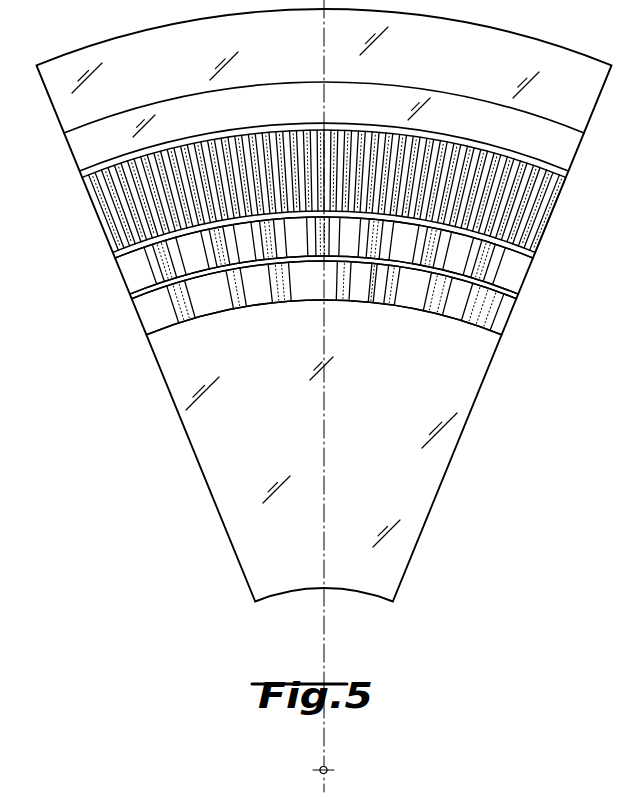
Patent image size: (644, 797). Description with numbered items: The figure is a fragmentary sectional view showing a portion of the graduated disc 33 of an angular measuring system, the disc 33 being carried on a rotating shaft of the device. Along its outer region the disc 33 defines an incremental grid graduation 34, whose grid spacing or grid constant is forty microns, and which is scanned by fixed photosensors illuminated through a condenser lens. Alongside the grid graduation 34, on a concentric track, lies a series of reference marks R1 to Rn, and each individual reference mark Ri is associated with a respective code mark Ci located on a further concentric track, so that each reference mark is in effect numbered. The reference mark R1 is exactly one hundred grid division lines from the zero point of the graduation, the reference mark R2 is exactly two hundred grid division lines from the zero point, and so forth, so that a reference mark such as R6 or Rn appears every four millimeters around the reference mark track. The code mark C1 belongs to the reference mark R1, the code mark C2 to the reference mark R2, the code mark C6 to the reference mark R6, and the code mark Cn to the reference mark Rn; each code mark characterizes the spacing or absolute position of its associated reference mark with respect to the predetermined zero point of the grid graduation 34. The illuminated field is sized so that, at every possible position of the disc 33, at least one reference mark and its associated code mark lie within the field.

The disc 33 is at (428, 460).
The incremental grid graduation 34 is at (308, 142).
The reference mark R1 is at (157, 256).
The reference mark Ri is at (148, 277).
The reference mark R2 is at (217, 258).
The reference mark R6 is at (418, 258).
The reference mark Rn is at (502, 265).
The code mark C1 is at (173, 298).
The code mark Ci is at (173, 310).
The code mark C2 is at (238, 306).
The code mark C6 is at (430, 307).
The code mark Cn is at (497, 308).